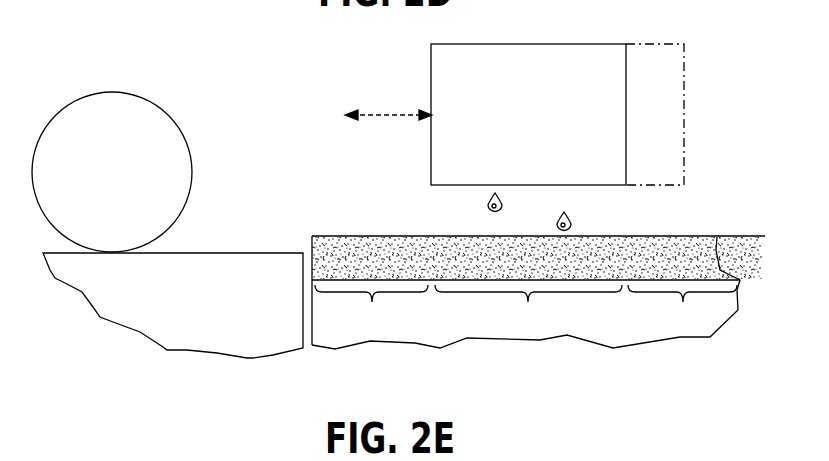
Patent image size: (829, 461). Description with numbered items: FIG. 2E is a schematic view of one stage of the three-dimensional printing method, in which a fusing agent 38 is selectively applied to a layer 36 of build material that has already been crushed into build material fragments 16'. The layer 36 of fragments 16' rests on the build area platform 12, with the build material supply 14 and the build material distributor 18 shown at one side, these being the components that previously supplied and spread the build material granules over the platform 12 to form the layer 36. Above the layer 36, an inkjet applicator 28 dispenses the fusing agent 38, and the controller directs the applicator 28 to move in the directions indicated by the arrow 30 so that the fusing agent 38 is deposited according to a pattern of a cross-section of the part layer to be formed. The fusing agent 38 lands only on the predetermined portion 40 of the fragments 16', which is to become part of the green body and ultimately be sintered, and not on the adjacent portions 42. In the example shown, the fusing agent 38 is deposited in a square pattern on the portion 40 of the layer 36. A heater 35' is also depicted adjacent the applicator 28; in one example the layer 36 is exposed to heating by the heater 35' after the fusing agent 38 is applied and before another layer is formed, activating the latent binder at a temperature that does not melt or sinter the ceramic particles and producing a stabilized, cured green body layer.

The build area platform 12 is at (437, 317).
The build material supply 14 is at (172, 253).
The build material fragments 16' is at (538, 201).
The build material distributor 18 is at (188, 140).
The inkjet applicator 28 is at (528, 44).
The arrow 30 is at (380, 113).
The heater 35' is at (695, 114).
The layer 36 is at (377, 234).
The fusing agent 38 is at (571, 222).
The portion 40 is at (528, 310).
The portions 42 is at (526, 310).